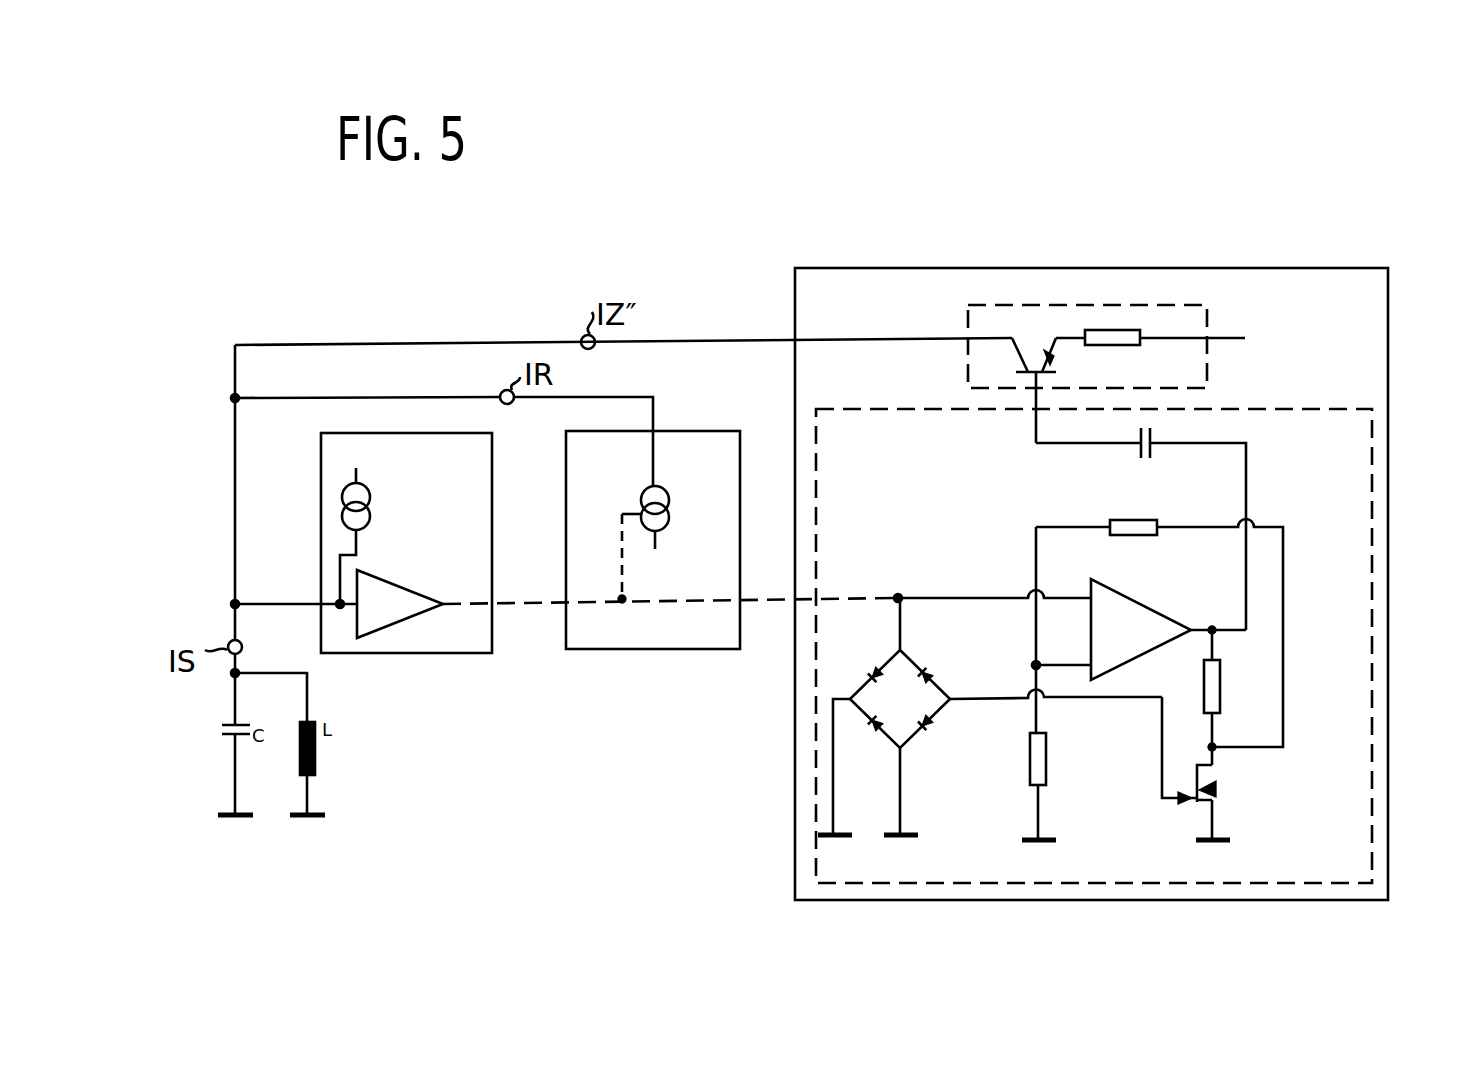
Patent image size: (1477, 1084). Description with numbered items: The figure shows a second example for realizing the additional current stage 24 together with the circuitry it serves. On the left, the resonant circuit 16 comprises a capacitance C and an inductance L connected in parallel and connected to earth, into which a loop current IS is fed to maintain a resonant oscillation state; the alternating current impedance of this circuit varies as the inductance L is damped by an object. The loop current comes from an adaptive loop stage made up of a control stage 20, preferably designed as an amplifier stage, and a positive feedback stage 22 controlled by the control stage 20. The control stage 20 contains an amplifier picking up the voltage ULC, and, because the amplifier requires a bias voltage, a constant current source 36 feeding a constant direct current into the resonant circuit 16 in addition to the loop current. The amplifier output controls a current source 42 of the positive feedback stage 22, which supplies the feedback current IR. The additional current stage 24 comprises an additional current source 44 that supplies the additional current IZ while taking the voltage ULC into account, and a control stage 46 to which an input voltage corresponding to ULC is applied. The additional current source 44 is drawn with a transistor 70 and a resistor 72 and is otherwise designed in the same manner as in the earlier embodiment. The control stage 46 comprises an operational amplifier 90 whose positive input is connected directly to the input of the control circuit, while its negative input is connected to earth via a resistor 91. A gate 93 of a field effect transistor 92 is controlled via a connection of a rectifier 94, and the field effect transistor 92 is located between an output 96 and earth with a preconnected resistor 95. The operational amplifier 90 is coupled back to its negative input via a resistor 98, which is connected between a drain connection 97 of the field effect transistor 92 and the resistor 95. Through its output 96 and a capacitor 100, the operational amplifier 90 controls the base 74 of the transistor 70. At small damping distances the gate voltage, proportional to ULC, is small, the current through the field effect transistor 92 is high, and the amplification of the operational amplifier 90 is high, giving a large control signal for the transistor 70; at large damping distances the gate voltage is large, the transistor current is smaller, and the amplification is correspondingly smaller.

The resonant circuit 16 is at (222, 770).
The control stage 20 is at (371, 582).
The positive feedback stage 22 is at (653, 581).
The additional current stage 24 is at (962, 258).
The constant current source 36 is at (342, 513).
The current source 42 is at (622, 514).
The additional current source 44 is at (1127, 280).
The control stage 46 is at (1146, 646).
The transistor 70 is at (1036, 338).
The resistor 72 is at (1130, 330).
The base 74 is at (1030, 382).
The operational amplifier 90 is at (1138, 612).
The resistor 91 is at (1030, 770).
The field effect transistor 92 is at (1222, 786).
The gate 93 is at (1165, 800).
The rectifier 94 is at (915, 670).
The resistor 95 is at (1220, 694).
The output 96 is at (1212, 626).
The drain connection 97 is at (1218, 750).
The resistor 98 is at (1125, 520).
The capacitor 100 is at (1155, 446).